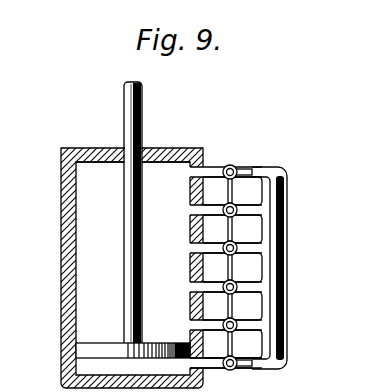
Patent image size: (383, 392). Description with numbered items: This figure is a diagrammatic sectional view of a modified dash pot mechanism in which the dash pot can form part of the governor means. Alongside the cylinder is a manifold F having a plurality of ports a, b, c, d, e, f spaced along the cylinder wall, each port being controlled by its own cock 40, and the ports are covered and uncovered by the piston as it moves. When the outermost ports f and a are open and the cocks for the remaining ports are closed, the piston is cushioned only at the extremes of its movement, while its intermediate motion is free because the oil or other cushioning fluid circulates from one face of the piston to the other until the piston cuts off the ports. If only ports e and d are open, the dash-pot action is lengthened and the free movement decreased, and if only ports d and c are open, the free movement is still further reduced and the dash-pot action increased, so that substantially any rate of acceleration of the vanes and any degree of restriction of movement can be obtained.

The cock 40 is at (234, 165).
The manifold F is at (284, 262).
The port a is at (226, 374).
The port b is at (232, 344).
The port c is at (232, 306).
The port d is at (232, 267).
The port e is at (232, 229).
The port f is at (232, 191).